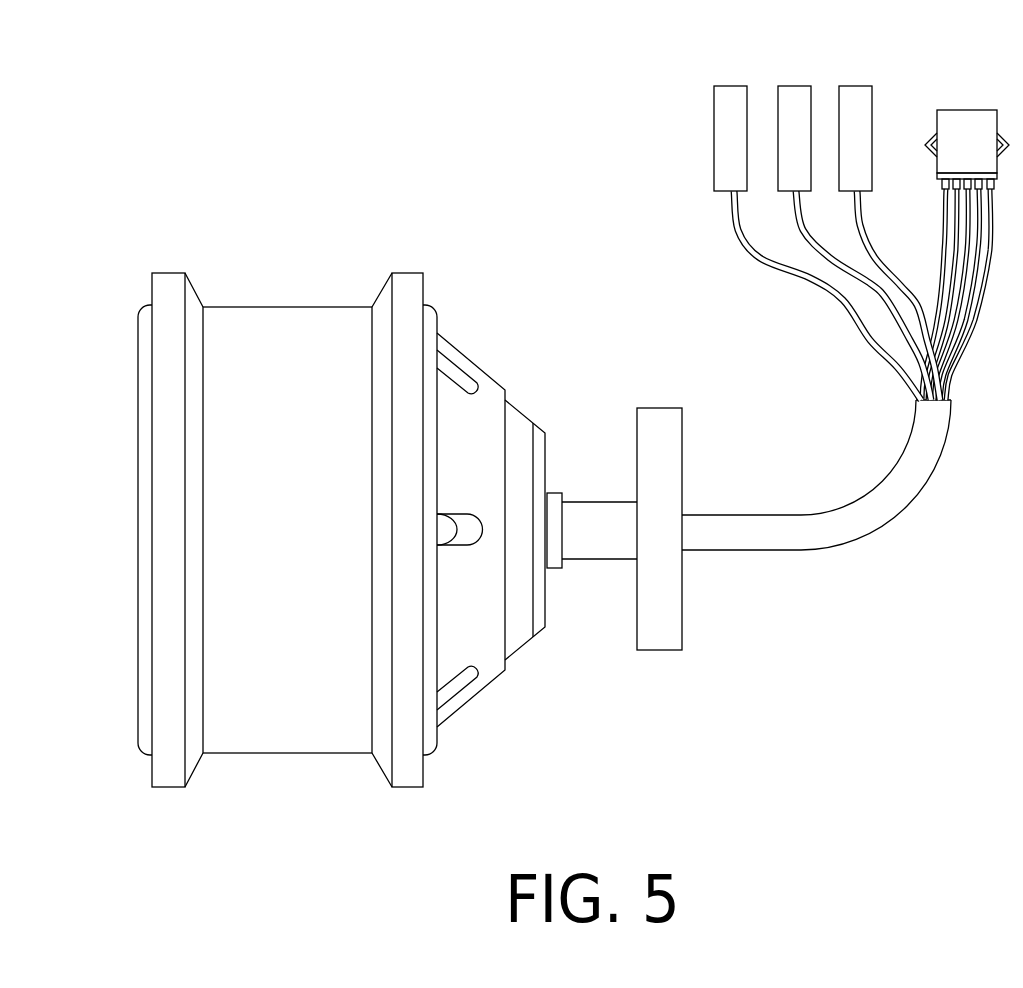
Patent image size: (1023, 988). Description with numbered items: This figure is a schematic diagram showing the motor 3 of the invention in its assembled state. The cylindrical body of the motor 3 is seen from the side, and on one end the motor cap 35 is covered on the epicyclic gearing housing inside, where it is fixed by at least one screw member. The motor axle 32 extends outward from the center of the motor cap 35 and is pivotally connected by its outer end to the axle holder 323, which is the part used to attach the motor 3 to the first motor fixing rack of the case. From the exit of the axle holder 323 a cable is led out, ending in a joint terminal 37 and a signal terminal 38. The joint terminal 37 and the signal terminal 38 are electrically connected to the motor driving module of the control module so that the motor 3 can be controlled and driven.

The motor 3 is at (403, 212).
The motor cap 35 is at (492, 657).
The motor axle 32 is at (596, 538).
The axle holder 323 is at (662, 642).
The joint terminal 37 is at (796, 93).
The signal terminal 38 is at (970, 122).